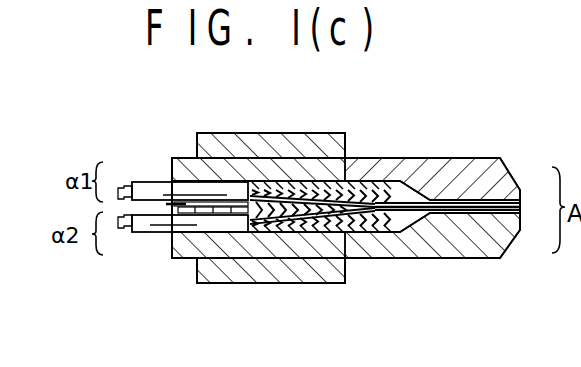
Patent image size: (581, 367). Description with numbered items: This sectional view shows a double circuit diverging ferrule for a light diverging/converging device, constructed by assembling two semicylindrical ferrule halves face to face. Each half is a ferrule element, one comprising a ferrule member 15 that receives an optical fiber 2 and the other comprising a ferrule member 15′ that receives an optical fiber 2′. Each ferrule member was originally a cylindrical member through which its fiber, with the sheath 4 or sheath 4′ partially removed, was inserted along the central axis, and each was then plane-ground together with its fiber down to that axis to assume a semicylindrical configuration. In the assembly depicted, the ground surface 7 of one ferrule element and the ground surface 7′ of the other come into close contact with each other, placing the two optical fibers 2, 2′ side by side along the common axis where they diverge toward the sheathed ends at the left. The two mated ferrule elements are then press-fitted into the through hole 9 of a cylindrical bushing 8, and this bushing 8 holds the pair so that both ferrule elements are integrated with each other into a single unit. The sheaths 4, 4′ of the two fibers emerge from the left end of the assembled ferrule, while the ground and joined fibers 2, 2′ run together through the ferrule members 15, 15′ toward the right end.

The optical fiber 2 is at (375, 210).
The optical fiber 2′ is at (377, 205).
The sheath 4 is at (151, 233).
The sheath 4′ is at (150, 182).
The ground surface 7 is at (286, 195).
The ground surface 7′ is at (200, 207).
The cylindrical bushing 8 is at (248, 133).
The through hole 9 is at (303, 163).
The ferrule member 15 is at (478, 259).
The ferrule member 15′ is at (518, 116).